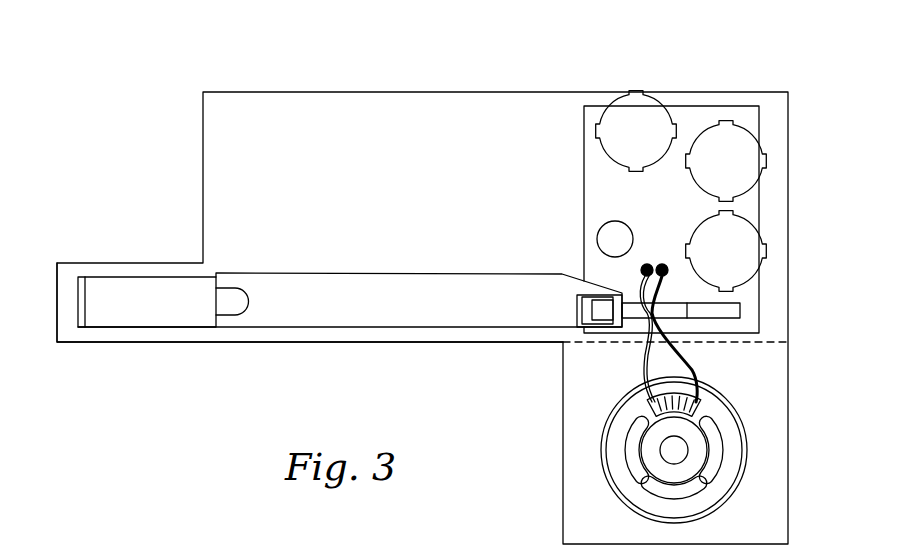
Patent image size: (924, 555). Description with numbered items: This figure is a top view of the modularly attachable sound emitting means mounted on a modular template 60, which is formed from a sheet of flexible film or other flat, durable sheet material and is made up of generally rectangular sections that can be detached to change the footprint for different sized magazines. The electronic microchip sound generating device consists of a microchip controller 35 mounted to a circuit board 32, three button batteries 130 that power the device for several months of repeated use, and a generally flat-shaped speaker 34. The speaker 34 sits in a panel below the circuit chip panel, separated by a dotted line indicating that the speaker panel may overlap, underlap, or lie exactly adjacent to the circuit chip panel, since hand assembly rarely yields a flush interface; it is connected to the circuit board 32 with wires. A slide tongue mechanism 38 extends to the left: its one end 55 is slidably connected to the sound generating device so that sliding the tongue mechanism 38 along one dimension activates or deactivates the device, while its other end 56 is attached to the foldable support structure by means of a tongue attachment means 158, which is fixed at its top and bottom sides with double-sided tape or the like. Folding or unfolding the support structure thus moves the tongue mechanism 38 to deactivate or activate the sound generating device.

The modular template 60 is at (846, 82).
The other end of the tongue mechanism 56 is at (135, 346).
The slide tongue mechanism 38 is at (403, 285).
The tongue attachment means 158 is at (225, 302).
The one end of the tongue mechanism 55 is at (562, 308).
The circuit board 32 is at (735, 326).
The microchip controller 35 is at (600, 235).
The button batteries 130 is at (636, 91).
The speaker 34 is at (632, 403).